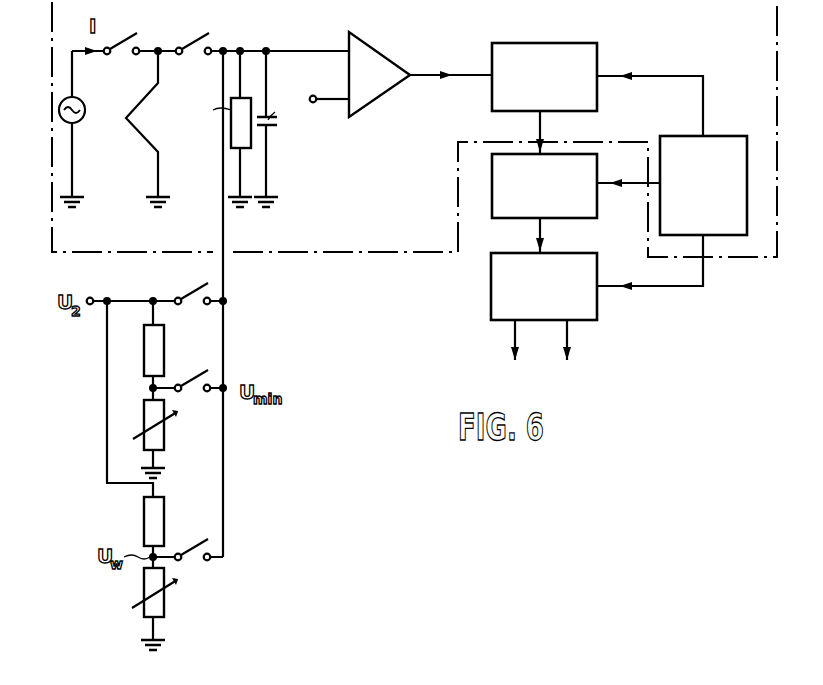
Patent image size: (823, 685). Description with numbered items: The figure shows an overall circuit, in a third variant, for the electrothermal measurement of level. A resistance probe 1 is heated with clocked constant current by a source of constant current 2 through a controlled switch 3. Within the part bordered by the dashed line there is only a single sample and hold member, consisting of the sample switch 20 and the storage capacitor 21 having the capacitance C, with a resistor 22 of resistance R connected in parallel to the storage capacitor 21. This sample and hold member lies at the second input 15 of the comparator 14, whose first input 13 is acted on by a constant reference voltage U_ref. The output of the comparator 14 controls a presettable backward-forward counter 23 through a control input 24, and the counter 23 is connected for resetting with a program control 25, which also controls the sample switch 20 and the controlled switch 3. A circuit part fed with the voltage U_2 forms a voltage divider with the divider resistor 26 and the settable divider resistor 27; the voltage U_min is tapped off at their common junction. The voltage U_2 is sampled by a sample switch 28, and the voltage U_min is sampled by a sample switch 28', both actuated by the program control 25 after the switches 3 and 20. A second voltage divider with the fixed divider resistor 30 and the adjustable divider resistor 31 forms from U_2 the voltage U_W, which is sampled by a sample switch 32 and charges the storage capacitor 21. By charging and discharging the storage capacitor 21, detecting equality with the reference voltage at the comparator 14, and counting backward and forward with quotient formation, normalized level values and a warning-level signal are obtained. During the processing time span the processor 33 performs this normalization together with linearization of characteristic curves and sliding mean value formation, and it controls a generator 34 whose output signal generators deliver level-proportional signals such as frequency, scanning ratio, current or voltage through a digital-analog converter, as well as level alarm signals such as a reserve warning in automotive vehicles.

The resistance probe 1 is at (142, 98).
The source of constant current 2 is at (86, 108).
The controlled switch 3 is at (120, 40).
The first input 13 is at (324, 95).
The comparator 14 is at (369, 44).
The second input 15 is at (316, 46).
The sample switch 20 is at (186, 42).
The storage capacitor 21 is at (277, 128).
The resistor 22 is at (231, 136).
The presettable backward-forward counter 23 is at (557, 42).
The control input 24 is at (466, 73).
The program control 25 is at (731, 136).
The divider resistor 26 is at (144, 350).
The settable divider resistor 27 is at (144, 414).
The sample switch 28 is at (193, 299).
The sample switch 28' is at (193, 388).
The fixed divider resistor 30 is at (144, 517).
The adjustable divider resistor 31 is at (144, 590).
The sample switch 32 is at (187, 546).
The processor 33 is at (592, 209).
The generator 34 is at (592, 311).